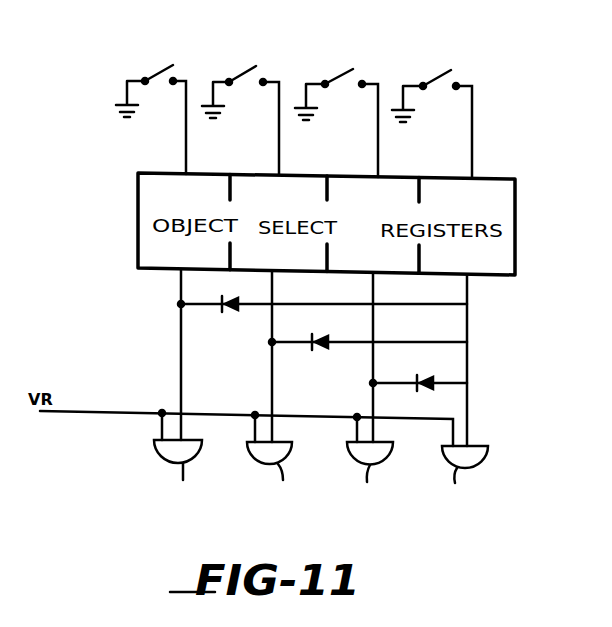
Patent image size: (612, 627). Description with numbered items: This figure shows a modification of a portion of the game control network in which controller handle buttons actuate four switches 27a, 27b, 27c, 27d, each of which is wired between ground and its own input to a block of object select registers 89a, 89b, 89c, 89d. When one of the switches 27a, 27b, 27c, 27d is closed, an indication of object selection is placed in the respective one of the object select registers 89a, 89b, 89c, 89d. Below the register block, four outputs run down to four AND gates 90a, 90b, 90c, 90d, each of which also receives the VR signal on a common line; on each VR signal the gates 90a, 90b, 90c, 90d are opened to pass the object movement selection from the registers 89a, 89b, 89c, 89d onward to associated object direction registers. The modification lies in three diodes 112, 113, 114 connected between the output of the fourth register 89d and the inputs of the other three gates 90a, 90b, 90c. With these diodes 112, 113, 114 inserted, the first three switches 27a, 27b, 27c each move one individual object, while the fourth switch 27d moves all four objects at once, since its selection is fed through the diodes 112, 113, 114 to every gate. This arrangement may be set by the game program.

The switch 27a is at (161, 71).
The switch 27b is at (245, 72).
The switch 27c is at (338, 72).
The switch 27d is at (437, 73).
The object select register 89a is at (193, 185).
The object select register 89b is at (295, 190).
The object select register 89c is at (390, 190).
The object select register 89d is at (489, 190).
The diode 112 is at (322, 318).
The diode 113 is at (368, 359).
The diode 114 is at (418, 395).
The gate 90a is at (182, 477).
The gate 90b is at (275, 475).
The gate 90c is at (369, 478).
The gate 90d is at (461, 480).